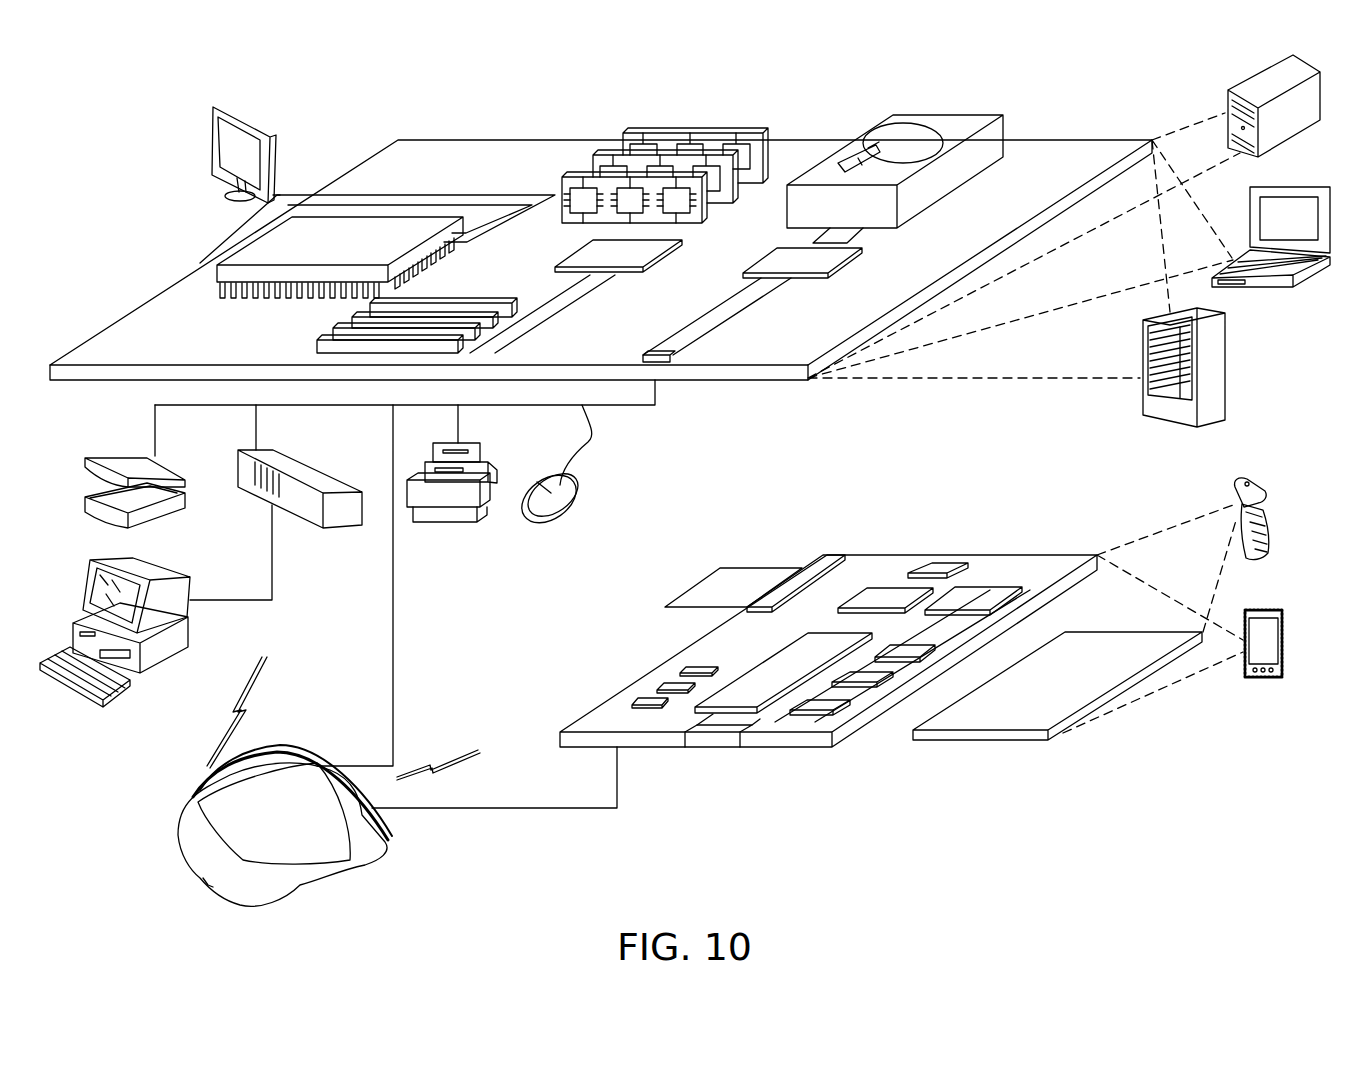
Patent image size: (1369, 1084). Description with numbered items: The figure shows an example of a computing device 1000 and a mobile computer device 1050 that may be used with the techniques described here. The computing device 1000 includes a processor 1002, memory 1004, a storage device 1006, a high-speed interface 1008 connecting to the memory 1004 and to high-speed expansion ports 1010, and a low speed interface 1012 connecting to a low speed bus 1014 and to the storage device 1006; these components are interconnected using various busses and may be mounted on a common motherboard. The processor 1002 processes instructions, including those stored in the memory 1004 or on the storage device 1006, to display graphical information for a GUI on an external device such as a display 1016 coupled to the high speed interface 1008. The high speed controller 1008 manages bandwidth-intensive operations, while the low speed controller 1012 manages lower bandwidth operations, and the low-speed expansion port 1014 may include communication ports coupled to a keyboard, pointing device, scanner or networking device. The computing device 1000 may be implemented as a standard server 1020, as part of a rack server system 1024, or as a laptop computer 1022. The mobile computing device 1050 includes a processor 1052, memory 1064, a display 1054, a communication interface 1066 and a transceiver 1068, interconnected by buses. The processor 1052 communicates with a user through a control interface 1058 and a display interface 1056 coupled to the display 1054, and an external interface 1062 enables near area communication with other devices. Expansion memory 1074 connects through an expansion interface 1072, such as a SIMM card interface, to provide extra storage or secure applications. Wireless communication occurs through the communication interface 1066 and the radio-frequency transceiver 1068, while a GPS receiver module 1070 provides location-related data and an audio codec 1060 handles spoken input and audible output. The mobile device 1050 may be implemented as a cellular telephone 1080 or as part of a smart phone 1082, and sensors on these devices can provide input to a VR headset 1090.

The computing device 1000 is at (350, 90).
The processor 1002 is at (240, 244).
The memory 1004 is at (702, 130).
The storage device 1006 is at (938, 113).
The high-speed interface 1008 is at (625, 248).
The high-speed expansion ports 1010 is at (344, 327).
The low speed interface 1012 is at (788, 258).
The low speed bus 1014 is at (660, 352).
The display 1016 is at (213, 108).
The standard server 1020 is at (1255, 84).
The laptop computer 1022 is at (1312, 187).
The rack server system 1024 is at (1226, 366).
The mobile computer device 1050 is at (1168, 726).
The processor 1052 is at (757, 678).
The display 1054 is at (1097, 657).
The display interface 1056 is at (823, 705).
The control interface 1058 is at (870, 680).
The audio codec 1060 is at (907, 650).
The external interface 1062 is at (710, 734).
The memory 1064 is at (663, 685).
The communication interface 1066 is at (893, 593).
The transceiver 1068 is at (978, 593).
The GPS receiver module 1070 is at (938, 567).
The expansion interface 1072 is at (807, 568).
The expansion memory 1074 is at (722, 568).
The cellular telephone 1080 is at (1247, 480).
The smart phone 1082 is at (1261, 610).
The VR headset 1090 is at (380, 897).